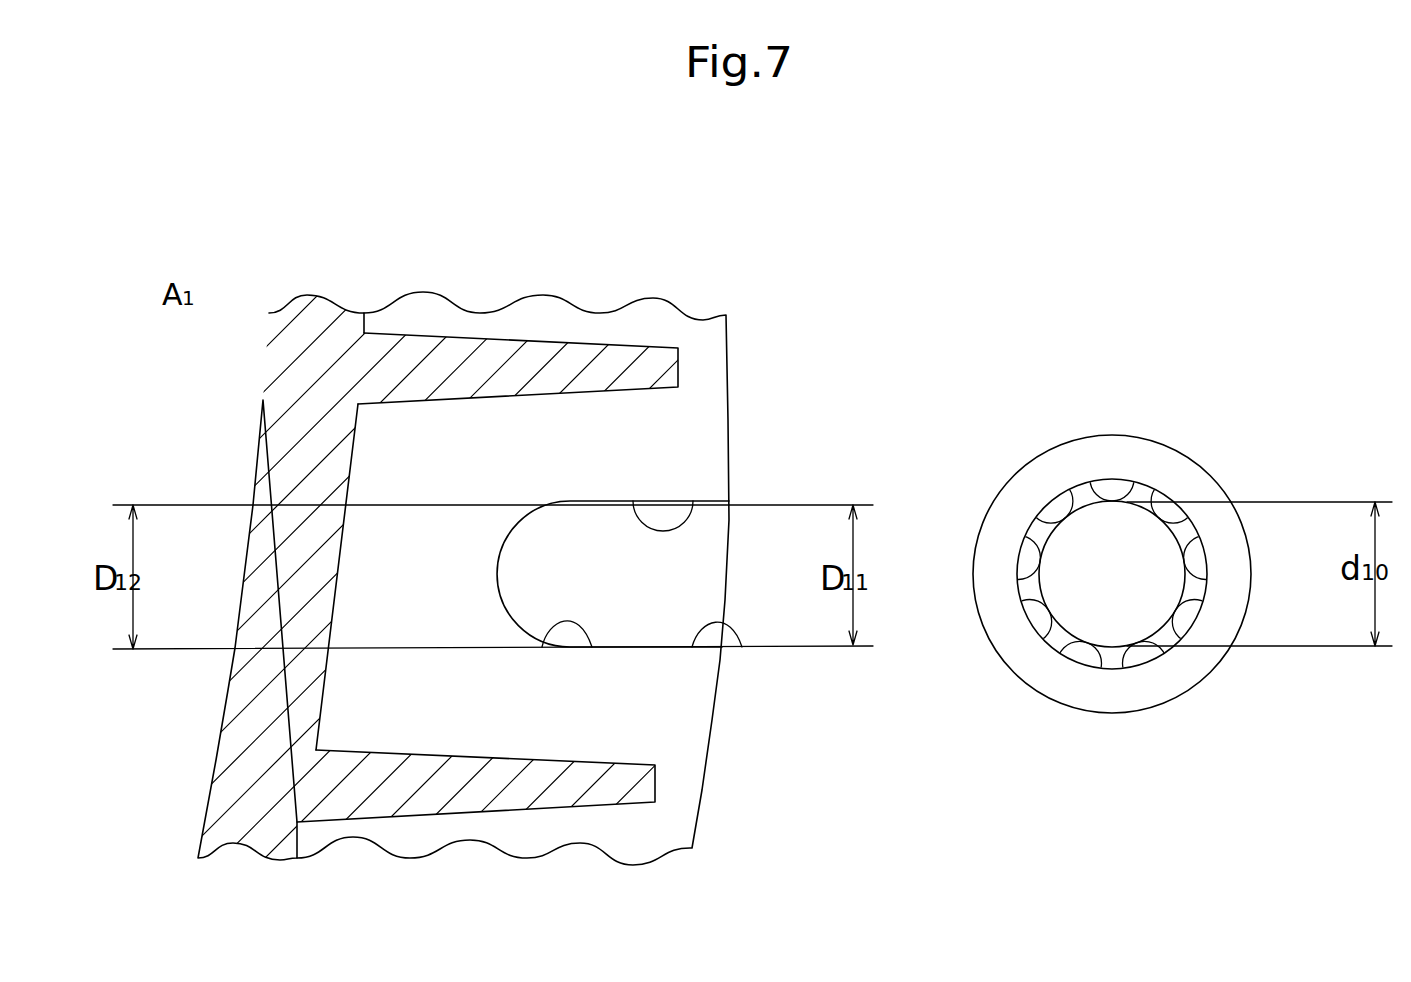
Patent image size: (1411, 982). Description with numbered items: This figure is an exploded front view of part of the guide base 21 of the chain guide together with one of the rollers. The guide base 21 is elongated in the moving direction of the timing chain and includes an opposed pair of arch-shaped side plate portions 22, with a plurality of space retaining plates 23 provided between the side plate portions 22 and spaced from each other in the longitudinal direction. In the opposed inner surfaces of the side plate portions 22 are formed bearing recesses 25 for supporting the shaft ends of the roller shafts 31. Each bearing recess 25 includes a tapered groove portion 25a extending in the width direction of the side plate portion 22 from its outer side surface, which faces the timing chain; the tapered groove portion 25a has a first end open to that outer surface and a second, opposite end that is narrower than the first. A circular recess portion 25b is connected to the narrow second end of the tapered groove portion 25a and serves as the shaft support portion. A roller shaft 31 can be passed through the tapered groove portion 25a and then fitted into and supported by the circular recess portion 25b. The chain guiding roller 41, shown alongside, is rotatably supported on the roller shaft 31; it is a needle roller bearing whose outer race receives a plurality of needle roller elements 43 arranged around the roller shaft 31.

The guide base 21 is at (273, 408).
The side plate portion 22 is at (650, 325).
The space retaining plate 23 is at (490, 360).
The bearing recess 25 is at (693, 501).
The tapered groove portion 25a is at (742, 647).
The circular recess portion 25b is at (592, 647).
The roller shaft 31 is at (1102, 542).
The chain guiding roller 41 is at (1190, 438).
The needle roller element 43 is at (1140, 653).